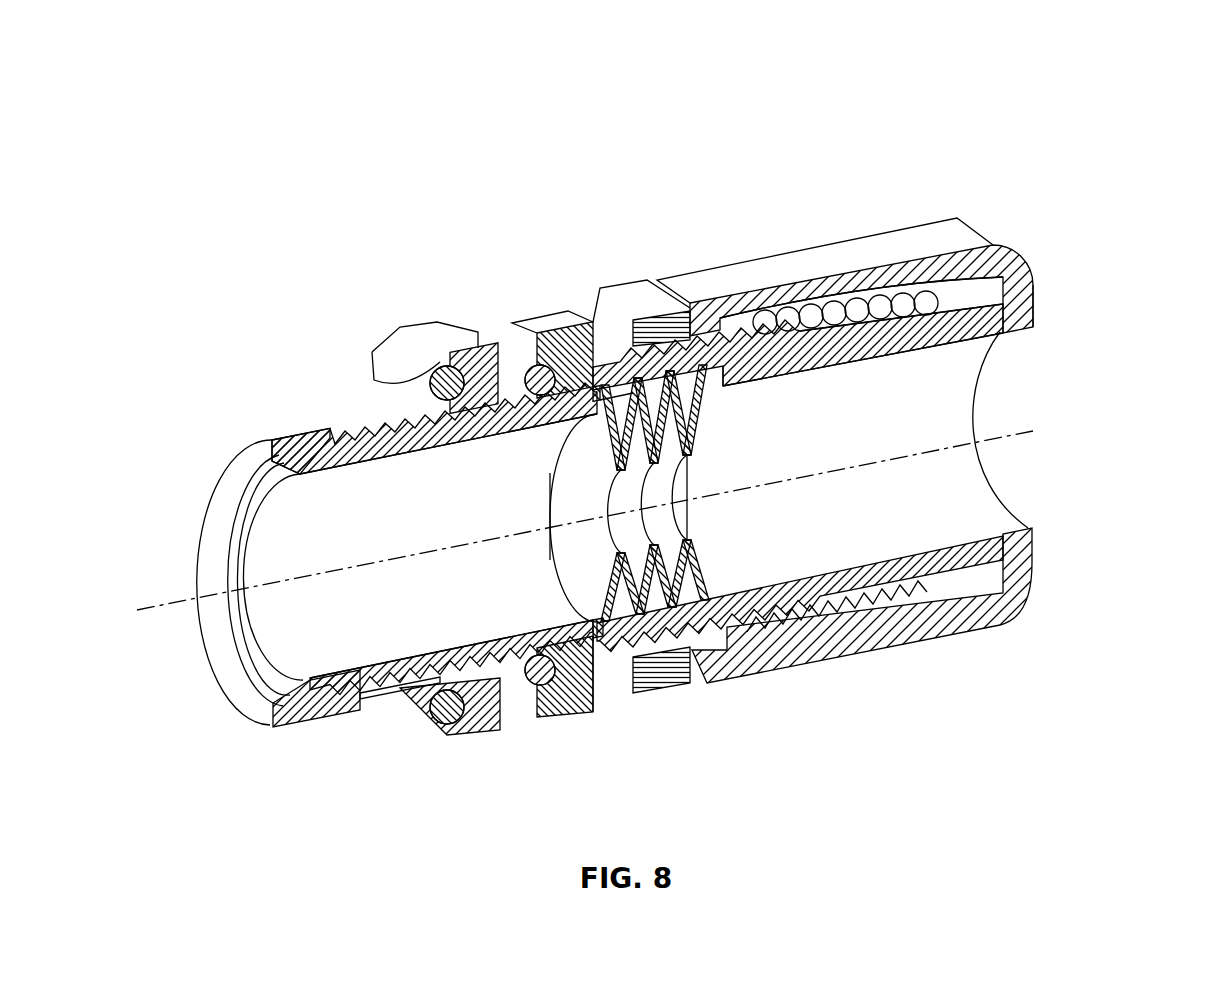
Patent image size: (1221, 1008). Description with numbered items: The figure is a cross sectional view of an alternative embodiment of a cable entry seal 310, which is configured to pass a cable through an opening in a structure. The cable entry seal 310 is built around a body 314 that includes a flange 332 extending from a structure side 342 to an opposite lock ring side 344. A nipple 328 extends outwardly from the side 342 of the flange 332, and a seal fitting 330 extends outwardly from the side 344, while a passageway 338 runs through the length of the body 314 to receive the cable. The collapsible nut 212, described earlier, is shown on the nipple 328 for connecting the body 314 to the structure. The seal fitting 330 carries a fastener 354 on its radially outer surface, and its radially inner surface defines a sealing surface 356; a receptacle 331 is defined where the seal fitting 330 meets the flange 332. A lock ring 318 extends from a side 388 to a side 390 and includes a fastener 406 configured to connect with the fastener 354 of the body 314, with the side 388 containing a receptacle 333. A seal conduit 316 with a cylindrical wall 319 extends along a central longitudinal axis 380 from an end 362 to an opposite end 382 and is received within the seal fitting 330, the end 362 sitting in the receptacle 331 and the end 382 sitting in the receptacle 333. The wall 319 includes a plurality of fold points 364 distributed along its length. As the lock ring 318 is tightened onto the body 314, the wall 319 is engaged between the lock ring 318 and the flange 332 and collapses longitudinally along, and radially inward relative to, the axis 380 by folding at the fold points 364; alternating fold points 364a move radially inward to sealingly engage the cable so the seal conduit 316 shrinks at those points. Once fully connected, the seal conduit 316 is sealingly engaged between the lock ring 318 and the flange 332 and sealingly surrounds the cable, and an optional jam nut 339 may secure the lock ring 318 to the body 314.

The cable entry seal 310 is at (656, 435).
The collapsible nut 212 is at (275, 430).
The side 342 is at (478, 322).
The flange 332 is at (541, 312).
The side 344 is at (603, 327).
The jam nut 339 is at (630, 296).
The side 388 is at (685, 327).
The fastener 354 is at (752, 328).
The seal fitting 330 is at (790, 337).
The lock ring 318 is at (813, 427).
The side 390 is at (1066, 256).
The sealing surface 356 is at (792, 373).
The fastener 406 is at (723, 368).
The end 362 is at (562, 484).
The fold points 364 is at (695, 460).
The fold points 364a is at (695, 536).
The end 382 is at (740, 554).
The seal conduit 316 is at (562, 543).
The cylindrical wall 319 is at (560, 588).
The central longitudinal axis 380 is at (140, 611).
The passageway 338 is at (323, 630).
The nipple 328 is at (365, 690).
The receptacle 333 is at (767, 633).
The receptacle 331 is at (604, 678).
The body 314 is at (603, 707).